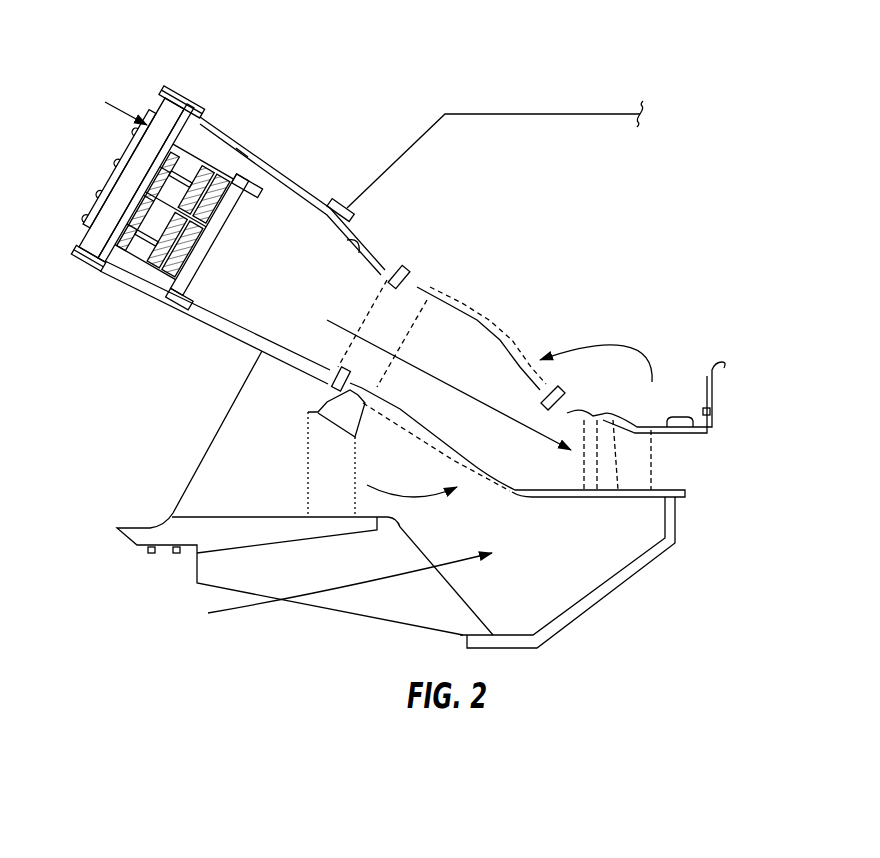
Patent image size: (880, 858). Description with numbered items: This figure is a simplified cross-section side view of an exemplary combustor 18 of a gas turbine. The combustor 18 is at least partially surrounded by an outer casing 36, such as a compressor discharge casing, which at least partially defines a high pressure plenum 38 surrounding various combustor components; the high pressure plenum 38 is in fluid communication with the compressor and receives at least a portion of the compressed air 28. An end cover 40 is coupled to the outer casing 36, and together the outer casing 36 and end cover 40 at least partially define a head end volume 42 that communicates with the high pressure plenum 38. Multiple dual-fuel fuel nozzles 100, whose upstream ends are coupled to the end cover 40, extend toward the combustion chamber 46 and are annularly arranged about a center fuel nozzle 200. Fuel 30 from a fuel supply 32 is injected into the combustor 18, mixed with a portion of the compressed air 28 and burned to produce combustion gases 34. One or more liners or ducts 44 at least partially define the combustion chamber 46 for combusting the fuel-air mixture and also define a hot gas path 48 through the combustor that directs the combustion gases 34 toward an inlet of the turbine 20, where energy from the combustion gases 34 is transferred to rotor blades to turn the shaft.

The combustor 18 is at (322, 100).
The turbine 20 is at (695, 470).
The compressed air 28 is at (623, 350).
The fuel 30 is at (124, 106).
The fuel supply 32 is at (97, 97).
The combustion gases 34 is at (478, 407).
The outer casing 36 is at (302, 189).
The high pressure plenum 38 is at (569, 197).
The end cover 40 is at (94, 221).
The head end volume 42 is at (133, 264).
The liner 44 is at (362, 253).
The combustion chamber 46 is at (276, 278).
The hot gas path 48 is at (463, 361).
The dual-fuel fuel nozzle 100 is at (215, 176).
The center fuel nozzle 200 is at (241, 157).